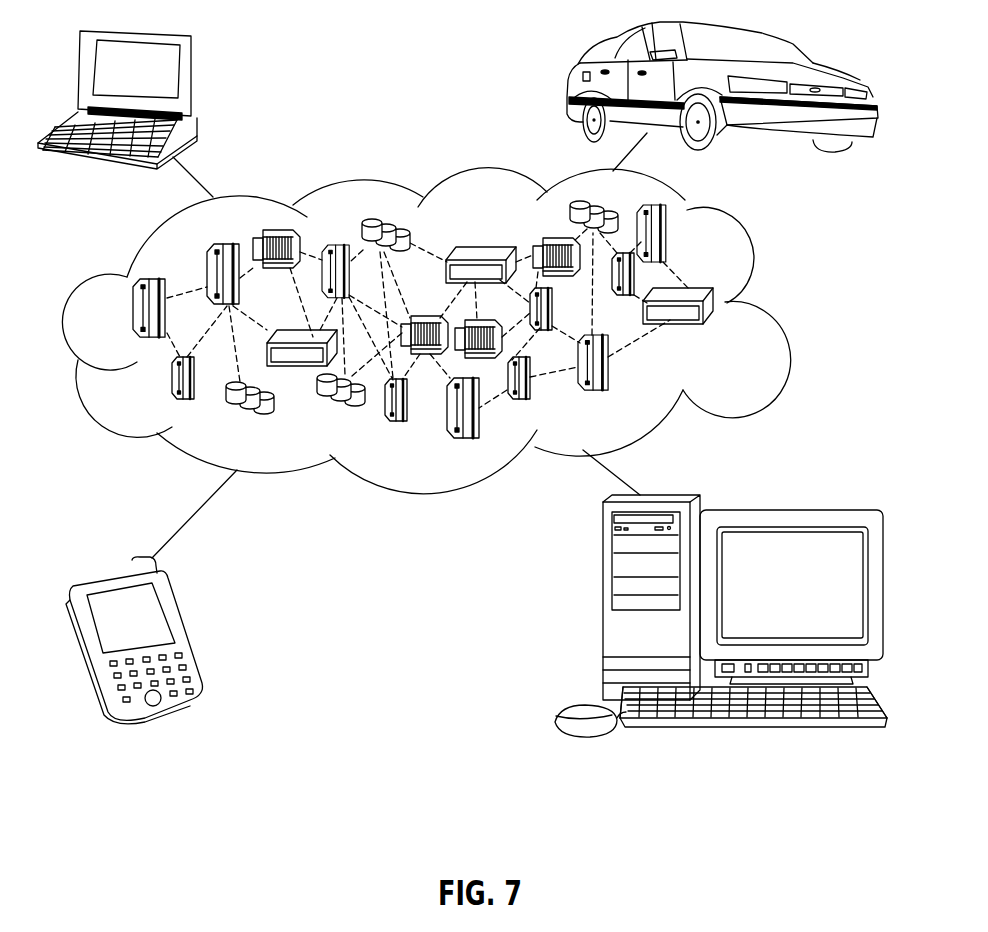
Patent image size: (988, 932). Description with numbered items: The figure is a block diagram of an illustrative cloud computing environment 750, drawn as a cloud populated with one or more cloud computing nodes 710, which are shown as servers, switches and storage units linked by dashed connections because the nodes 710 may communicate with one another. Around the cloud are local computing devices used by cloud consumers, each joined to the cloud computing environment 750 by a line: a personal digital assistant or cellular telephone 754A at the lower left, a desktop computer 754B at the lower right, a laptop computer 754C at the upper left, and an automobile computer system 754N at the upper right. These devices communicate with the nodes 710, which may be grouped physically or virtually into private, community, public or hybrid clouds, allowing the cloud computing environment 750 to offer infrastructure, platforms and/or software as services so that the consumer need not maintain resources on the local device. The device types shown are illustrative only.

The cloud computing nodes 710 is at (730, 323).
The cloud computing environment 750 is at (755, 267).
The personal digital assistant or cellular telephone 754A is at (187, 630).
The desktop computer 754B is at (603, 608).
The laptop computer 754C is at (193, 73).
The automobile computer system 754N is at (575, 78).